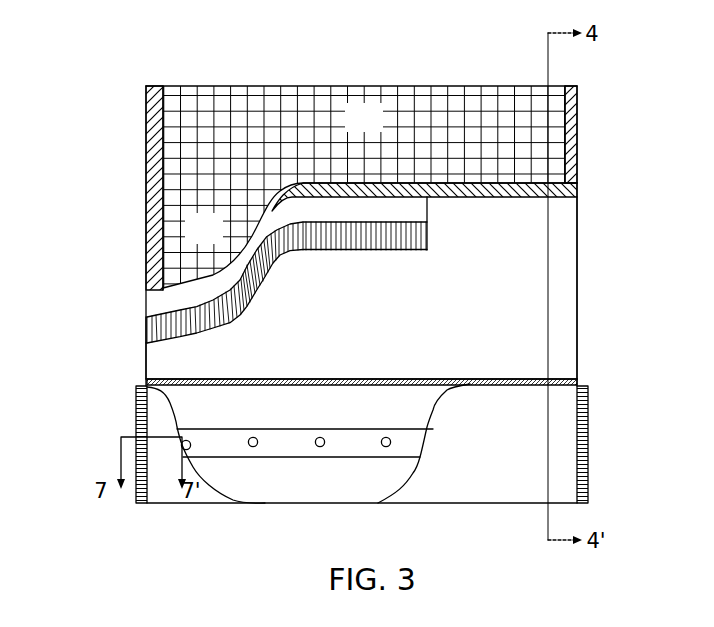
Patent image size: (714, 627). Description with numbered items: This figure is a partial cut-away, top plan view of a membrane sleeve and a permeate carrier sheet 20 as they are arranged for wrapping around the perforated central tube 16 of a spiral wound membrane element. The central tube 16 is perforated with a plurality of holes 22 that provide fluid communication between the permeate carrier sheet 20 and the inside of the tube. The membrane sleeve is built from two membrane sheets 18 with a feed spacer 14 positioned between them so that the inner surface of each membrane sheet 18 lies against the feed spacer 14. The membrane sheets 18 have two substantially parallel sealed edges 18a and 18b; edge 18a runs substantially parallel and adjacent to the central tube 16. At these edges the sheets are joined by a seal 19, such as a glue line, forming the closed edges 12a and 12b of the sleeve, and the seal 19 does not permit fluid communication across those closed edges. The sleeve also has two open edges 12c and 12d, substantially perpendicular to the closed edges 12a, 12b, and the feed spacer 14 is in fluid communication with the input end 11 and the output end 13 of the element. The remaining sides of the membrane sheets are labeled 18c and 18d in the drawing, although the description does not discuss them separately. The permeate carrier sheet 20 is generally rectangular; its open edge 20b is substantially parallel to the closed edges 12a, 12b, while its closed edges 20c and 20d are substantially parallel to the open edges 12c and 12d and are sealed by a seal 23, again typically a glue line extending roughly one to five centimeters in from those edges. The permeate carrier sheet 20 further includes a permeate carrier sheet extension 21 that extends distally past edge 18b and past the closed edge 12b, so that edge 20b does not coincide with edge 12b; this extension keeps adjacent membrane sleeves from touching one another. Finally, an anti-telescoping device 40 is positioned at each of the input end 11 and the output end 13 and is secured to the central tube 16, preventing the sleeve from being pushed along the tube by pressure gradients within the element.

The input end 11 is at (128, 414).
The closed edge of membrane sleeve 12a is at (494, 373).
The closed edge of membrane sleeve 12b is at (326, 185).
The open edge of membrane sleeve 12c is at (146, 325).
The open edge of membrane sleeve 12d is at (577, 246).
The output end 13 is at (612, 392).
The feed spacer 14 is at (353, 238).
The central tube 16 is at (277, 451).
The membrane sheet 18 is at (327, 220).
The sealed edge of membrane sheet 18a is at (577, 368).
The sealed edge of membrane sheet 18b is at (571, 152).
The left side of film layer 18c is at (146, 350).
The right side of film layer 18d is at (577, 292).
The seal 19 is at (146, 383).
The permeate carrier sheet 20 is at (191, 240).
The open edge of permeate carrier sheet 20b is at (450, 86).
The closed edge of permeate carrier sheet 20c is at (146, 128).
The closed edge of permeate carrier sheet 20d is at (580, 108).
The permeate carrier sheet extension 21 is at (352, 129).
The holes 22 is at (249, 439).
The seal 23 is at (153, 98).
The anti-telescoping device 40 is at (136, 503).